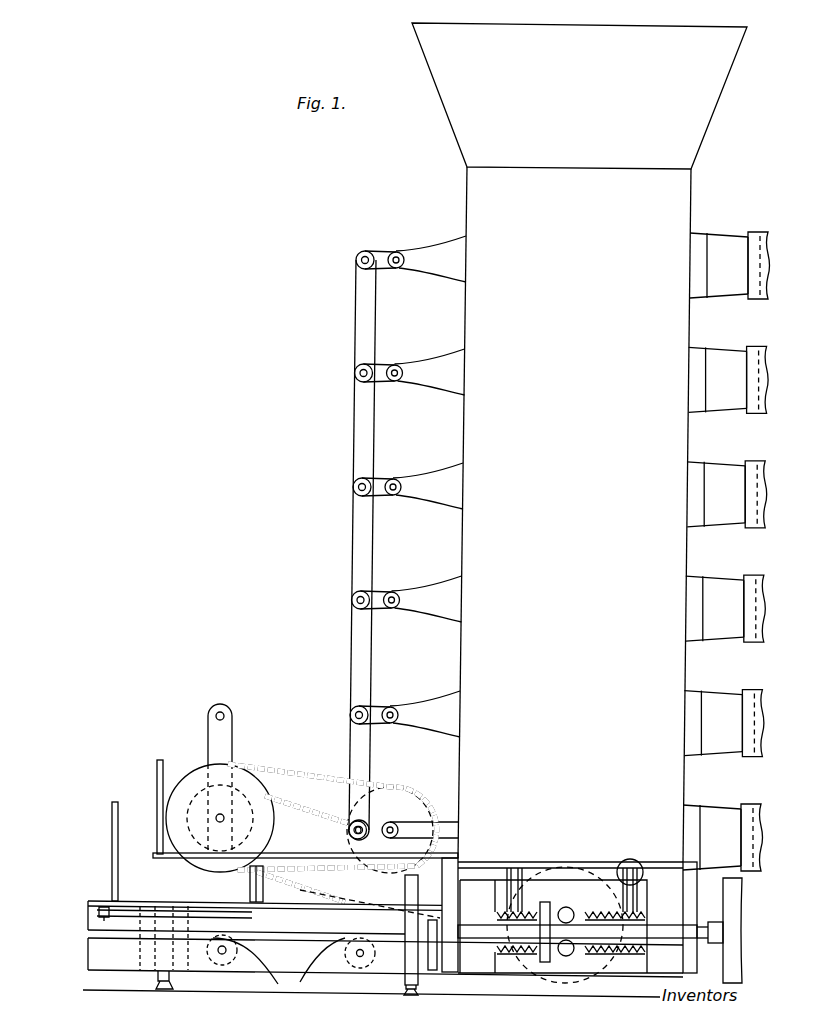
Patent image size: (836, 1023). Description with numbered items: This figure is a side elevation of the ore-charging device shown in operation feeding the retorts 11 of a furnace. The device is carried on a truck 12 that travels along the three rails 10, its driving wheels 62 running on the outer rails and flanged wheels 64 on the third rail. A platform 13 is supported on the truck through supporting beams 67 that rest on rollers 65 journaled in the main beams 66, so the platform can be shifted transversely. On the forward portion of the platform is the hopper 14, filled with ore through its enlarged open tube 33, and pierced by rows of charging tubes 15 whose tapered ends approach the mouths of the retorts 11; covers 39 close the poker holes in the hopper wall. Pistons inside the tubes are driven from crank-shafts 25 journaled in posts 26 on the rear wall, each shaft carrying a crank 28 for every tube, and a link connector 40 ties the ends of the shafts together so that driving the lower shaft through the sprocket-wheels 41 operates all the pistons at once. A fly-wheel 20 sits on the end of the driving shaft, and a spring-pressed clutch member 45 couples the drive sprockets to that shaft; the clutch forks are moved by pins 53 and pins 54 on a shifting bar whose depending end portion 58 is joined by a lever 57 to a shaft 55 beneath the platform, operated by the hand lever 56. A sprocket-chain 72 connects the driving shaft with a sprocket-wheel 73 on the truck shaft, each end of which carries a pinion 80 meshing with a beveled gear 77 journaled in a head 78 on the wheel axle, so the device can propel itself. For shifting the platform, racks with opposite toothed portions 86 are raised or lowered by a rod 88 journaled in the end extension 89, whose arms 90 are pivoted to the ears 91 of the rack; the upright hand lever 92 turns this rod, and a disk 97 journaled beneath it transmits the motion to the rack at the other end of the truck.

The rails 10 is at (157, 986).
The retorts 11 is at (760, 292).
The truck 12 is at (88, 958).
The platform 13 is at (88, 901).
The hopper 14 is at (574, 514).
The charging tubes 15 is at (715, 551).
The fly-wheel 20 is at (206, 770).
The crank-shaft 25 is at (397, 256).
The posts 26 is at (428, 486).
The crank 28 is at (354, 261).
The open tube 33 is at (579, 96).
The covers 39 is at (450, 892).
The link connector 40 is at (352, 432).
The sprocket-wheels 41 is at (405, 800).
The clutch member 45 is at (322, 790).
The pins 53 is at (205, 868).
The pins 54 is at (262, 866).
The shaft 55 is at (180, 905).
The hand lever 56 is at (111, 846).
The lever 57 is at (230, 937).
The depending end portion 58 is at (301, 887).
The wheels 62 is at (420, 986).
The flanged wheels 64 is at (176, 978).
The rollers 65 is at (312, 966).
The main beams 66 is at (291, 952).
The supporting beams 67 is at (370, 910).
The sprocket-chain 72 is at (280, 792).
The sprocket-wheel 73 is at (592, 852).
The beveled gear 77 is at (572, 956).
The head 78 is at (545, 964).
The pinion 80 is at (572, 906).
The toothed portions 86 is at (620, 940).
The rod 88 is at (562, 866).
The end extension 89 is at (452, 912).
The arms 90 is at (514, 866).
The ears 91 is at (628, 862).
The hand lever 92 is at (156, 772).
The disk 97 is at (434, 970).